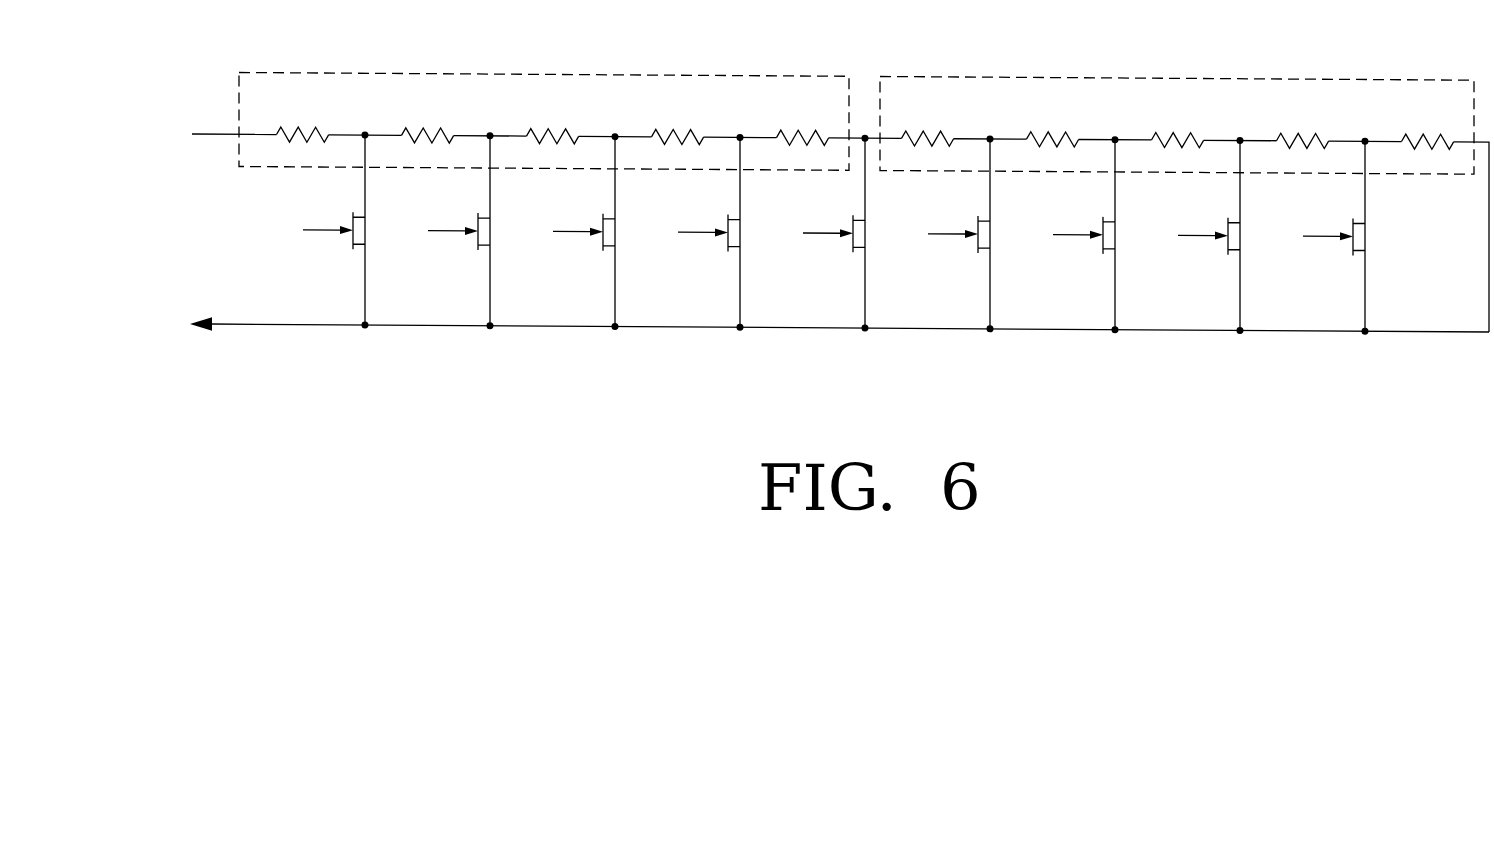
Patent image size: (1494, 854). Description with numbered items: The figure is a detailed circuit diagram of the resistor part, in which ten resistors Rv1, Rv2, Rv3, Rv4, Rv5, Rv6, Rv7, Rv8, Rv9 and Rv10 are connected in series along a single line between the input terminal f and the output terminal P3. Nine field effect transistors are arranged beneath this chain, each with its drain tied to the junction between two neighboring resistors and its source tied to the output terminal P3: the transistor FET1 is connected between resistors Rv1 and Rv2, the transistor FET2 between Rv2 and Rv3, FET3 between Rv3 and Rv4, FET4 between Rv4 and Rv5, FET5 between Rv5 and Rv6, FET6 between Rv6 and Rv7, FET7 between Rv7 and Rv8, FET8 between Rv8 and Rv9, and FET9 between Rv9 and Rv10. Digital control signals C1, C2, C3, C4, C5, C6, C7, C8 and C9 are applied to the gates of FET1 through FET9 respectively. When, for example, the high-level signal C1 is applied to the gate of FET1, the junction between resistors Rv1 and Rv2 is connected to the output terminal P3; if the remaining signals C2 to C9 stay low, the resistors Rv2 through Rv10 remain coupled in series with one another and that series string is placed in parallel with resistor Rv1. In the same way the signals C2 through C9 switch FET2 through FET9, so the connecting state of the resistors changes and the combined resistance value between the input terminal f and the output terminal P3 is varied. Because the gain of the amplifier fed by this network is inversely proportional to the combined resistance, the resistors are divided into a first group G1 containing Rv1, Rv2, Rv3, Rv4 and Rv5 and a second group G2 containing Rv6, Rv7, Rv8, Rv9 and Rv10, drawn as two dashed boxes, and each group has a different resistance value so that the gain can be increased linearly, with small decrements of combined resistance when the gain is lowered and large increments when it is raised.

The input terminal f is at (222, 134).
The output terminal P3 is at (820, 328).
The first group G1 is at (553, 71).
The second group G2 is at (1175, 71).
The resistor Rv1 is at (303, 120).
The resistor Rv2 is at (428, 121).
The resistor Rv3 is at (553, 121).
The resistor Rv4 is at (678, 122).
The resistor Rv5 is at (803, 123).
The resistor Rv6 is at (928, 124).
The resistor Rv7 is at (1053, 124).
The resistor Rv8 is at (1178, 125).
The resistor Rv9 is at (1303, 126).
The resistor Rv10 is at (1427, 127).
The field effect transistor FET1 is at (362, 227).
The field effect transistor FET2 is at (487, 227).
The field effect transistor FET3 is at (612, 227).
The field effect transistor FET4 is at (737, 227).
The field effect transistor FET5 is at (862, 227).
The field effect transistor FET6 is at (987, 227).
The field effect transistor FET7 is at (1112, 227).
The field effect transistor FET8 is at (1237, 227).
The field effect transistor FET9 is at (1362, 227).
The digital control signal C1 is at (308, 231).
The digital control signal C2 is at (433, 231).
The digital control signal C3 is at (558, 232).
The digital control signal C4 is at (683, 233).
The digital control signal C5 is at (808, 234).
The digital control signal C6 is at (933, 235).
The digital control signal C7 is at (1058, 235).
The digital control signal C8 is at (1183, 236).
The digital control signal C9 is at (1308, 237).